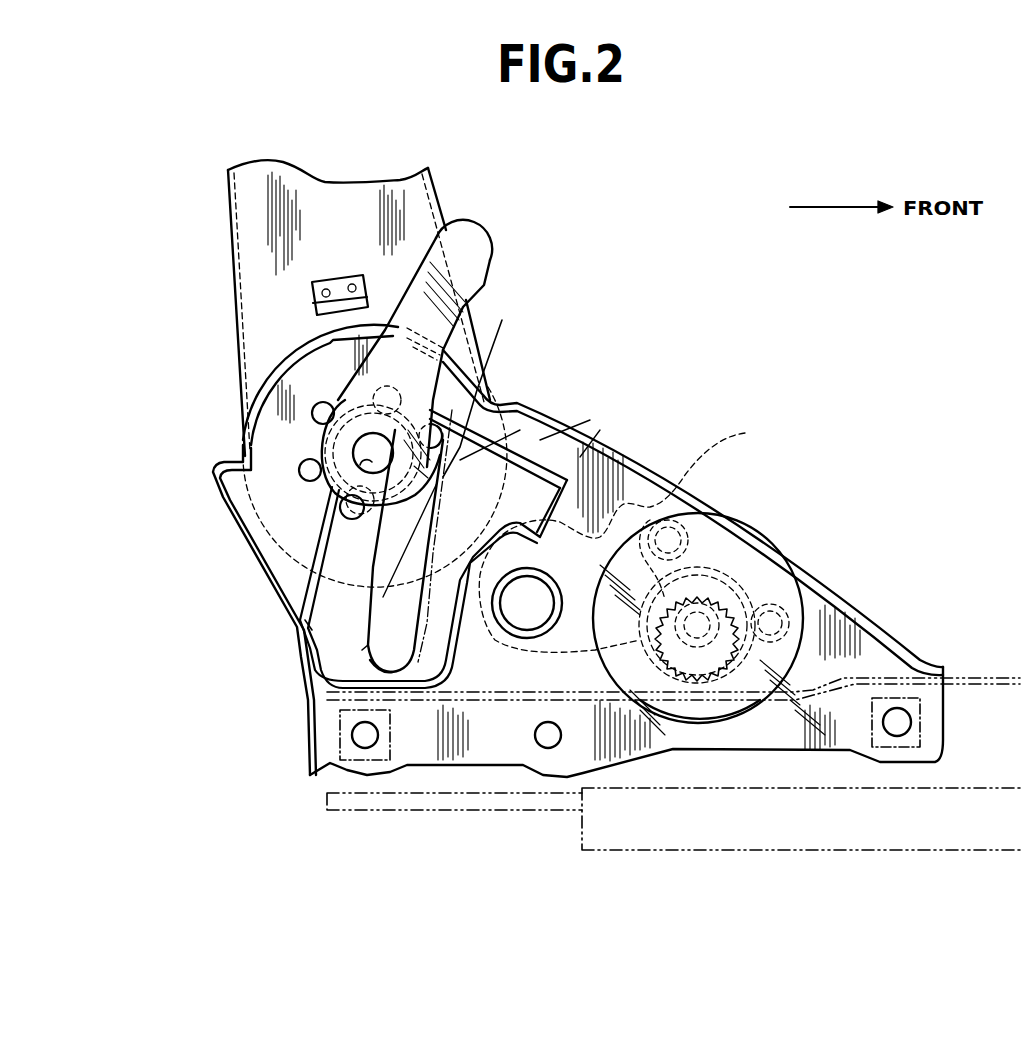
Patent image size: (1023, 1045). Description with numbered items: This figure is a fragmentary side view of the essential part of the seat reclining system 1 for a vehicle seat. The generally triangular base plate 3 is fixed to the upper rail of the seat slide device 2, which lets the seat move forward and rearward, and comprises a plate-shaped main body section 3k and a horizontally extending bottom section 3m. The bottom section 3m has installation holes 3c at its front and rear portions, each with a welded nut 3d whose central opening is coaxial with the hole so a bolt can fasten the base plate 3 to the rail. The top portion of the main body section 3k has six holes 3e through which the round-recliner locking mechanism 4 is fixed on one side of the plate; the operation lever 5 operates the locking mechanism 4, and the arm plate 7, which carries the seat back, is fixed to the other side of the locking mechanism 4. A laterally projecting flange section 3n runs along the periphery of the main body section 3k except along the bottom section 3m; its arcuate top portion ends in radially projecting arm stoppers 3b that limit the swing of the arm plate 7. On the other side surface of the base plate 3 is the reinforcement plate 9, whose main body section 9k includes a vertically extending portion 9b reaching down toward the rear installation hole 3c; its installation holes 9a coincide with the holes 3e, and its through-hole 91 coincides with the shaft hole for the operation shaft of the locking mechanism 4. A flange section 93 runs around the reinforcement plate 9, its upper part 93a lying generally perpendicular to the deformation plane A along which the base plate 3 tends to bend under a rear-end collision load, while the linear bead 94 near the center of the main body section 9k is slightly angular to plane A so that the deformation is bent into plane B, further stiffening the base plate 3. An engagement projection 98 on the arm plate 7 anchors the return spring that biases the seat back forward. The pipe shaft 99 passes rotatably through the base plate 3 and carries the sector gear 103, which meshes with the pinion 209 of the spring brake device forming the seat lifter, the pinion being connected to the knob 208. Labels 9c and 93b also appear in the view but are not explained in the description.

The seat reclining system 1 is at (742, 315).
The seat slide device 2 is at (978, 658).
The base plate 3 is at (847, 613).
The arm stopper 3b is at (503, 397).
The installation hole 3c is at (370, 746).
The nut 3d is at (370, 733).
The hole 3e is at (323, 413).
The main body section 3k is at (817, 623).
The bottom section 3m is at (573, 758).
The flange section 3n is at (647, 457).
The locking mechanism 4 is at (276, 352).
The operation lever 5 is at (489, 232).
The arm plate 7 is at (228, 212).
The reinforcement plate 9 is at (330, 627).
The installation hole 9a is at (432, 446).
The vertically extending portion 9b is at (390, 668).
The lever portion 9c is at (600, 430).
The main body section 9k is at (520, 430).
The through-hole 91 is at (347, 477).
The flange section 93 is at (372, 603).
The upper part of flange section 93a is at (540, 440).
The link lower portion 93b is at (383, 653).
The linear bead 94 is at (312, 622).
The engagement projection 98 is at (343, 278).
The pipe shaft 99 is at (530, 640).
The sector gear 103 is at (735, 434).
The knob 208 is at (750, 723).
The pinion 209 is at (690, 595).
The deformation plane A is at (485, 337).
The plane B is at (418, 662).